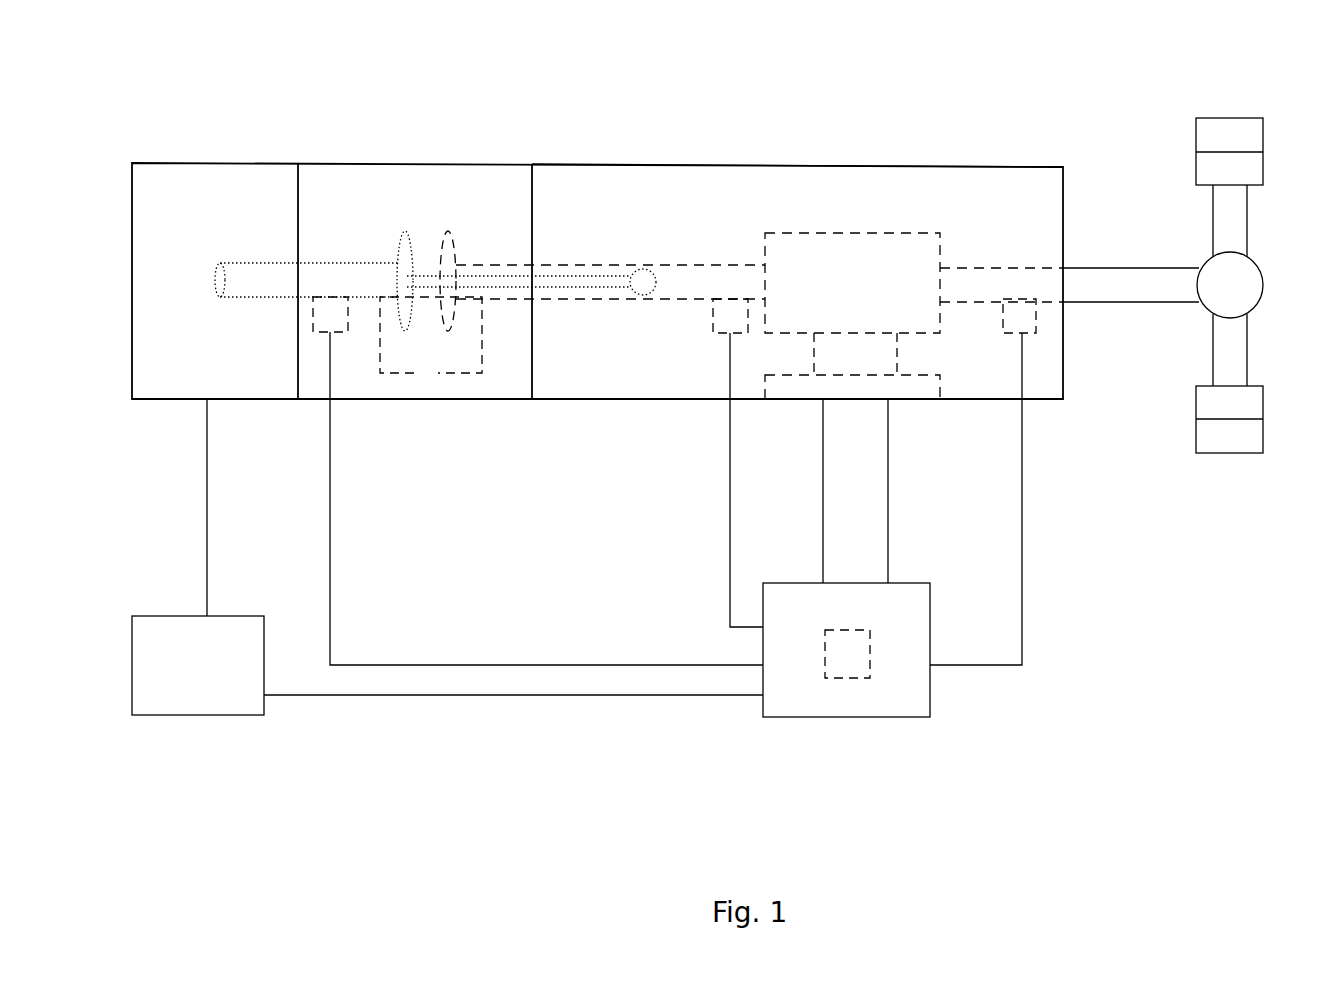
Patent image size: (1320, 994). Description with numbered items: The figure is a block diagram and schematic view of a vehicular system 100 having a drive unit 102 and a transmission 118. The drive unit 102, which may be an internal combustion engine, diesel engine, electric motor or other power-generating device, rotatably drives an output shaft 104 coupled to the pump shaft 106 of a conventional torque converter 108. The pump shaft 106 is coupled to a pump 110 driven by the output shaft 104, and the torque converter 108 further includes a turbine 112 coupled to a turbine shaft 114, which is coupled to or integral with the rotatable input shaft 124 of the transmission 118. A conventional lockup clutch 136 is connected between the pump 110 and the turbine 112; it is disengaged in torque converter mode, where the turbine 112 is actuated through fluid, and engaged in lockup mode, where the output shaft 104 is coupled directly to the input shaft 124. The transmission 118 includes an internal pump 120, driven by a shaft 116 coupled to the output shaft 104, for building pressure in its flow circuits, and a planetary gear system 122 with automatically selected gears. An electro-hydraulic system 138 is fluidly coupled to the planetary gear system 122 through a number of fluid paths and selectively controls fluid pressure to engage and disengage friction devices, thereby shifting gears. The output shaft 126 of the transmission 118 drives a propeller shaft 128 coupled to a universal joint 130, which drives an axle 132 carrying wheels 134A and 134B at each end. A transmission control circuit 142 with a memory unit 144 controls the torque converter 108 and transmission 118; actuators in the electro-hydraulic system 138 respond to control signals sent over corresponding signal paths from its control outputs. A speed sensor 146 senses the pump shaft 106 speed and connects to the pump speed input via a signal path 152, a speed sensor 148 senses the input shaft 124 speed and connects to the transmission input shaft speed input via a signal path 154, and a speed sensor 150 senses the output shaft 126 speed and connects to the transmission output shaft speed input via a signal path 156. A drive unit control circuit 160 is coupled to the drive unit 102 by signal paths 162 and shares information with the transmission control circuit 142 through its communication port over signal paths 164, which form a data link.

The vehicular system 100 is at (204, 104).
The drive unit 102 is at (265, 163).
The output shaft 104 is at (250, 300).
The pump shaft 106 is at (356, 262).
The torque converter 108 is at (388, 164).
The pump 110 is at (402, 240).
The turbine 112 is at (450, 246).
The turbine shaft 114 is at (478, 267).
The shaft 116 is at (574, 293).
The transmission 118 is at (712, 165).
The internal pump 120 is at (640, 270).
The planetary gear system 122 is at (852, 283).
The input shaft 124 is at (734, 265).
The output shaft 126 is at (978, 268).
The propeller shaft 128 is at (1120, 268).
The universal joint 130 is at (1258, 305).
The axle 132 is at (1248, 224).
The wheel 134A is at (1210, 118).
The wheel 134B is at (1213, 453).
The lockup clutch 136 is at (440, 378).
The electro-hydraulic system 138 is at (797, 399).
The transmission control circuit 142 is at (855, 718).
The memory unit 144 is at (853, 680).
The speed sensor 146 is at (313, 318).
The speed sensor 148 is at (713, 318).
The speed sensor 150 is at (1037, 325).
The signal path 152 is at (510, 658).
The signal path 154 is at (730, 472).
The signal path 156 is at (1022, 520).
The drive unit control circuit 160 is at (223, 716).
The signal paths 162 is at (207, 488).
The signal paths 164 is at (510, 699).